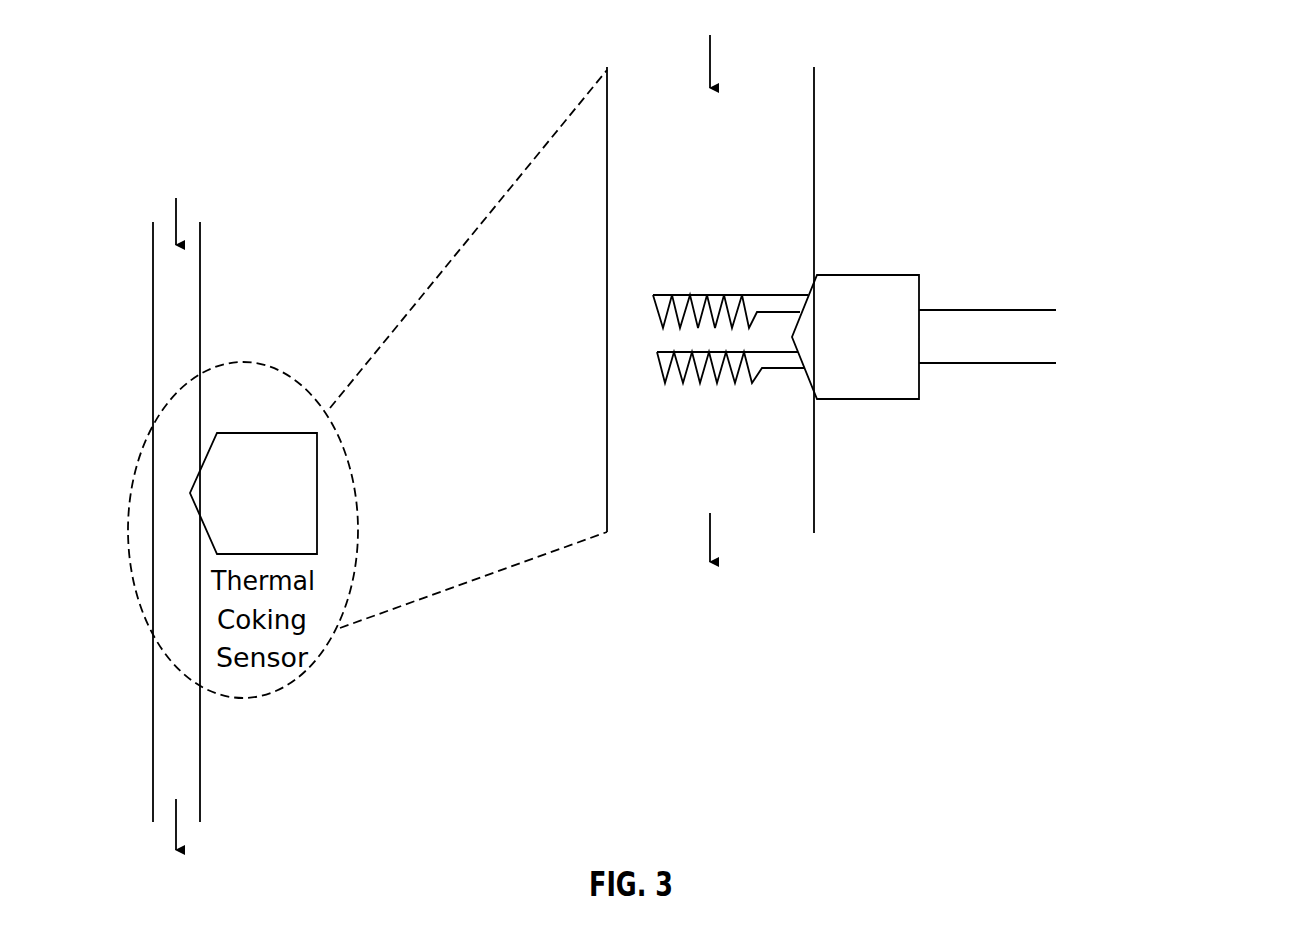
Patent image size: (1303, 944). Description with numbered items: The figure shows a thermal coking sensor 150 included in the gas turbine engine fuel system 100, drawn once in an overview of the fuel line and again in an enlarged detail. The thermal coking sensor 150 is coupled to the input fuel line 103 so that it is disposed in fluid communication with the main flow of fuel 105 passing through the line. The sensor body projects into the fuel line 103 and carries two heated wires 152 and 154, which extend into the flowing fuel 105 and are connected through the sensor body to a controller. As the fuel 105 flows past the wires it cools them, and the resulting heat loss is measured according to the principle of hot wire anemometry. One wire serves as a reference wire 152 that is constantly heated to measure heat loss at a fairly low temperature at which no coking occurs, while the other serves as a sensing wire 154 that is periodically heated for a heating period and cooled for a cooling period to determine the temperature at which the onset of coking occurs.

The fuel system 100 is at (130, 74).
The input fuel line 103 is at (201, 320).
The fuel 105 is at (178, 212).
The thermal coking sensor 150 is at (317, 470).
The reference wire 152 is at (690, 300).
The sensing wire 154 is at (683, 384).